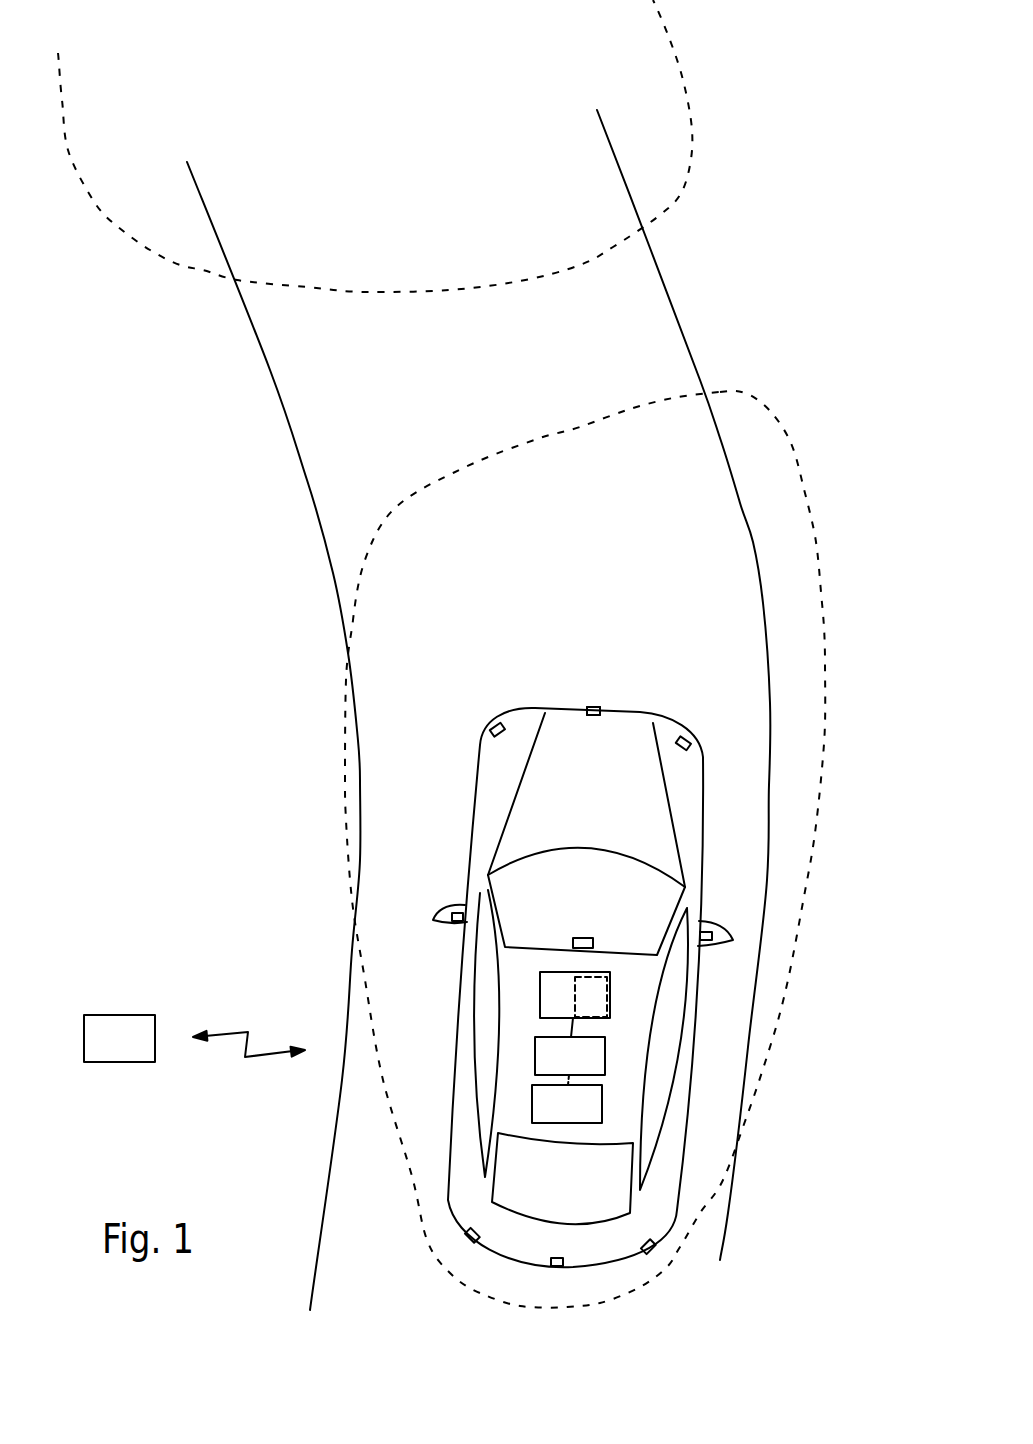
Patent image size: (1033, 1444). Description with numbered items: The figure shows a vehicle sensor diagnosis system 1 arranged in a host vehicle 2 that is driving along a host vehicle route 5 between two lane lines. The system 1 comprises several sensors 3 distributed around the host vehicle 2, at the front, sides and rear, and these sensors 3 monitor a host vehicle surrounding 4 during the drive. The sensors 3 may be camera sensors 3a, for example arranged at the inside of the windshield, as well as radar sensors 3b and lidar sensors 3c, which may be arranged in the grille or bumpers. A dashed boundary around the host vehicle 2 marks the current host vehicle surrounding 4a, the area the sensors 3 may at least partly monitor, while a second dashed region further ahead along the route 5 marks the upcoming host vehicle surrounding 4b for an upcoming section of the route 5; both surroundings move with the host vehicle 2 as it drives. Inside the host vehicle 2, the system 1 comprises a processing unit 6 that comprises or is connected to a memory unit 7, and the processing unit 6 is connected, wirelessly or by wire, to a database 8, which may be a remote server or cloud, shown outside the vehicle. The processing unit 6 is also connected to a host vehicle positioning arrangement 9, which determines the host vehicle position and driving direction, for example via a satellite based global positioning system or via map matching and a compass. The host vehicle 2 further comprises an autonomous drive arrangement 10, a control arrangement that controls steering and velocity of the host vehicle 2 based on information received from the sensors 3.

The vehicle sensor diagnosis system 1 is at (312, 958).
The host vehicle 2 is at (312, 805).
The sensors 3 is at (687, 744).
The camera sensor 3a is at (583, 938).
The radar sensor 3b is at (593, 707).
The lidar sensor 3c is at (593, 711).
The host vehicle surrounding 4 is at (712, 213).
The current host vehicle surrounding 4a is at (347, 692).
The upcoming host vehicle surrounding 4b is at (202, 267).
The host vehicle route 5 is at (482, 380).
The processing unit 6 is at (550, 1004).
The memory unit 7 is at (584, 1004).
The database 8 is at (194, 1038).
The host vehicle positioning arrangement 9 is at (563, 1067).
The autonomous drive arrangement 10 is at (553, 1117).